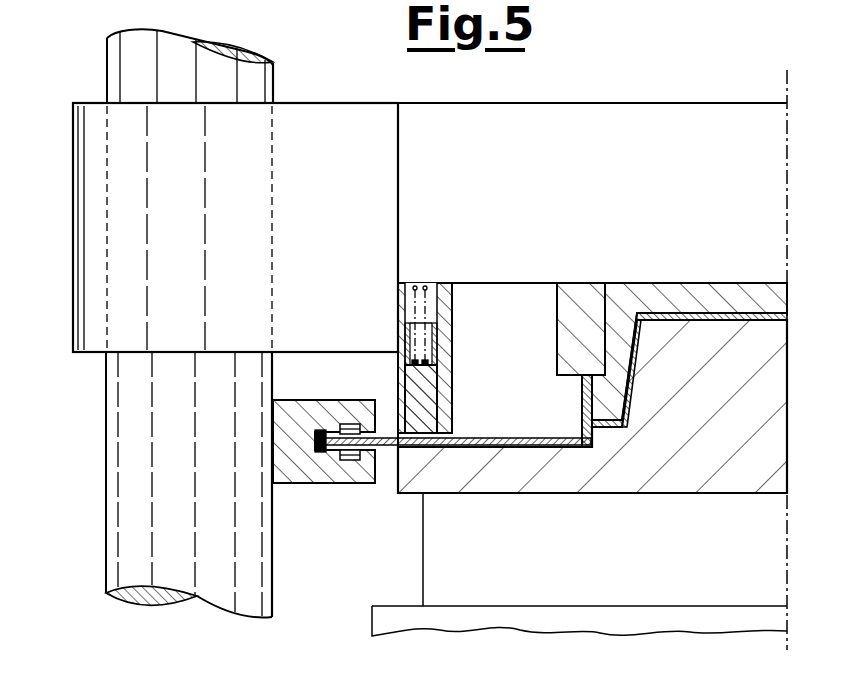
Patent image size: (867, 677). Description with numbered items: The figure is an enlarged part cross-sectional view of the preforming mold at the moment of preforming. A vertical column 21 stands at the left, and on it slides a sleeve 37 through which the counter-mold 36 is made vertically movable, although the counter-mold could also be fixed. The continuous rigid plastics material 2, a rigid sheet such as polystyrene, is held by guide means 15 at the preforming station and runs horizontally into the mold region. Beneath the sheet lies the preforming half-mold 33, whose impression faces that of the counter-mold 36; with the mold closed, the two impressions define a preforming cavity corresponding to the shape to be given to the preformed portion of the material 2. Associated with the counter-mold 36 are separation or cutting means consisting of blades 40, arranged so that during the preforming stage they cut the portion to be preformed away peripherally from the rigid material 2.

The sleeves 37 is at (92, 304).
The vertical columns 21 is at (122, 522).
The guide means 15 is at (301, 460).
The rigid plastics material 2 is at (388, 452).
The blades 40 is at (580, 402).
The counter-mold 36 is at (728, 300).
The preforming half-mold 33 is at (681, 467).